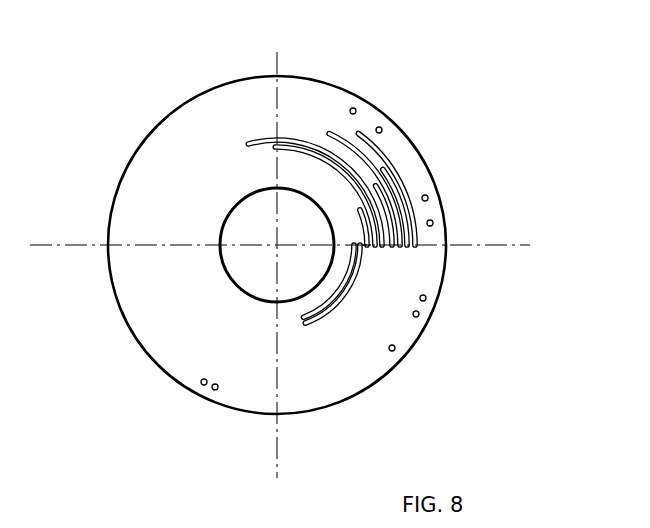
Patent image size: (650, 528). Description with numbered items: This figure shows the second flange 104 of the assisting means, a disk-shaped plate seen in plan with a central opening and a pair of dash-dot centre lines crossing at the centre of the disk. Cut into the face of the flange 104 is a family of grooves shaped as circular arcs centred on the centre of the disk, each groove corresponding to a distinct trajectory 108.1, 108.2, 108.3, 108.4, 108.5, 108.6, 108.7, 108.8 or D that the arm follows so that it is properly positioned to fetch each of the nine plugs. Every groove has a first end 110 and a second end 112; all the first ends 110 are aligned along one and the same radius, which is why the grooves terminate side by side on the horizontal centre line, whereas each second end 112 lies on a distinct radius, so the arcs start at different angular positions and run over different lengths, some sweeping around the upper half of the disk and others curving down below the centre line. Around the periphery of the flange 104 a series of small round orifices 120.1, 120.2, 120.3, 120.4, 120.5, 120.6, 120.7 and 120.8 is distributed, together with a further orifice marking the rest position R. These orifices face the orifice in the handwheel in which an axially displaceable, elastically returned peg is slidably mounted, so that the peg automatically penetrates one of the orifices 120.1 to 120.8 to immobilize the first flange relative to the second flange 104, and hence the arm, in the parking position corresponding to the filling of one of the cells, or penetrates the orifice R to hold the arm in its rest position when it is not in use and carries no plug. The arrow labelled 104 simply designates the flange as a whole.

The second flange 104 is at (505, 157).
The second end 112 is at (262, 148).
The trajectory 108.1 is at (360, 135).
The trajectory 108.2 is at (330, 131).
The trajectory 108.3 is at (374, 247).
The trajectory 108.4 is at (250, 140).
The trajectory 108.5 is at (285, 140).
The trajectory 108.6 is at (360, 248).
The trajectory 108.7 is at (307, 327).
The trajectory 108.8 is at (301, 318).
The first end 110 is at (366, 248).
The trajectory D is at (387, 185).
The rest position R is at (394, 351).
The orifice 120.1 is at (433, 223).
The orifice 120.2 is at (428, 197).
The orifice 120.3 is at (426, 298).
The orifice 120.4 is at (356, 109).
The orifice 120.5 is at (382, 130).
The orifice 120.6 is at (419, 317).
The orifice 120.7 is at (216, 390).
The orifice 120.8 is at (201, 385).